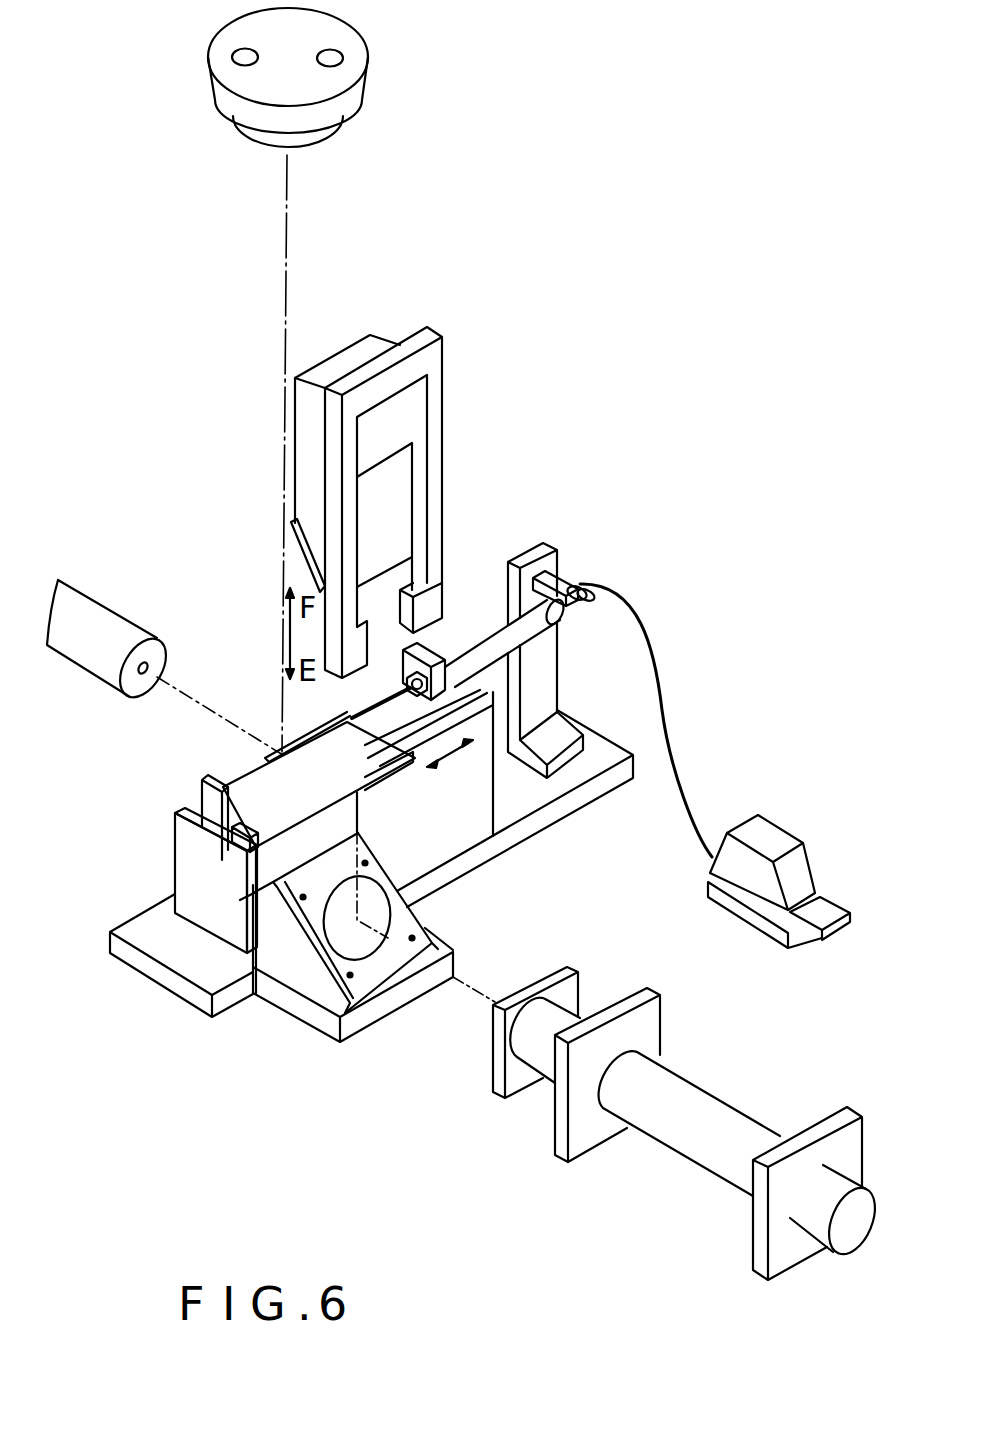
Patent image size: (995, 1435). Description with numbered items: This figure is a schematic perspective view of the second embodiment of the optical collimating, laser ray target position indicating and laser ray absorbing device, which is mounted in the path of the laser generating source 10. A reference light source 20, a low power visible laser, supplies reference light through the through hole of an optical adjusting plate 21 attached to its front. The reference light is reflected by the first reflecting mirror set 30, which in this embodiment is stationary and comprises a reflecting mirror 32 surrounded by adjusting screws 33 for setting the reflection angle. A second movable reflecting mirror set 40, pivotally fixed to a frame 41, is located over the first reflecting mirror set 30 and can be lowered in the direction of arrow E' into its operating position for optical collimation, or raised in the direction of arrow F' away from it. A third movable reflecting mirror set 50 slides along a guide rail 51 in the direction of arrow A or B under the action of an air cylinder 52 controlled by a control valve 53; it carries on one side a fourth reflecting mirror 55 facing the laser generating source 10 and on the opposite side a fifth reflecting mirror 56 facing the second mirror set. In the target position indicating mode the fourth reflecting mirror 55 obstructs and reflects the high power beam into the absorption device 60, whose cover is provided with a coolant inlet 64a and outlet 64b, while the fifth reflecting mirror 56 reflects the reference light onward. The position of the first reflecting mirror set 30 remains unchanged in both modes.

The laser generating source 10 is at (105, 615).
The reference light source 20 is at (672, 1142).
The optical adjusting plate 21 is at (513, 1083).
The first reflecting mirror set 30 is at (340, 986).
The reflecting mirror 32 is at (350, 937).
The adjusting screw 33 is at (277, 886).
The second movable reflecting mirror set 40 is at (317, 575).
The frame 41 is at (440, 417).
The third movable reflecting mirror set 50 is at (363, 747).
The guide rail 51 is at (472, 707).
The air cylinder 52 is at (523, 637).
The control valve 53 is at (777, 838).
The fourth reflecting mirror 55 is at (303, 742).
The fifth reflecting mirror 56 is at (362, 820).
The absorption device 60 is at (350, 112).
The inlet 64a is at (333, 57).
The outlet 64b is at (244, 52).